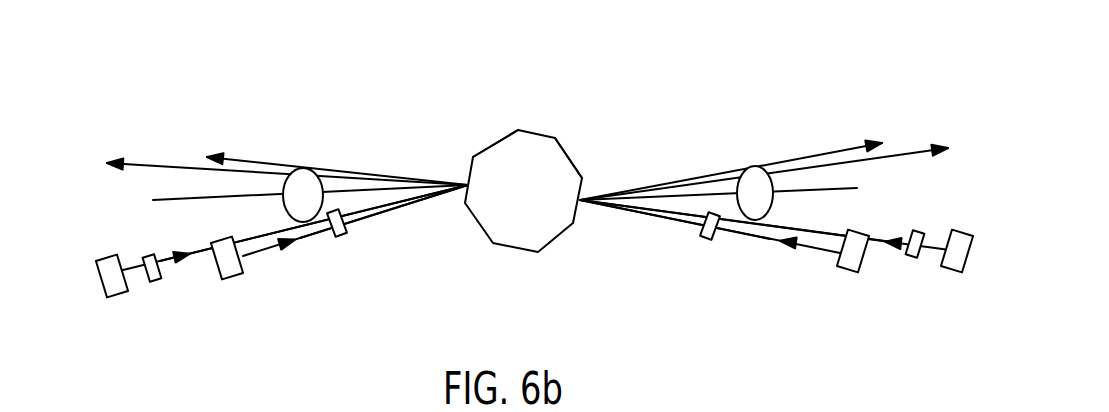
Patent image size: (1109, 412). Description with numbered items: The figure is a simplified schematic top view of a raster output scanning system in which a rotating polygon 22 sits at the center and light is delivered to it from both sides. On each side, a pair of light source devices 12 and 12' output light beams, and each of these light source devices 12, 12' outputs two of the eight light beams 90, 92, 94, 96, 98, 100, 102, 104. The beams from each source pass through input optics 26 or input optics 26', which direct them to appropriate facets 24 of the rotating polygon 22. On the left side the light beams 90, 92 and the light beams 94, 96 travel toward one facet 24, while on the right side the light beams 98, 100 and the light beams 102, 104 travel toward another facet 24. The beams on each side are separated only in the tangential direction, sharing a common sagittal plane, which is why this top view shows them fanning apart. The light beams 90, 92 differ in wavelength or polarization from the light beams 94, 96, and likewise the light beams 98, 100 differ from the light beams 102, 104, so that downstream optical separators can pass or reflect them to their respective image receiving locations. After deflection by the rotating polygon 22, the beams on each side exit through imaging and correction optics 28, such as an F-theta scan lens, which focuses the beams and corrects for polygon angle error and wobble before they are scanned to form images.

The light source device 12 is at (534, 296).
The light source device 12' is at (540, 288).
The rotating polygon 22 is at (537, 145).
The facet 24 is at (478, 143).
The input optics 26 is at (534, 281).
The input optics 26' is at (523, 244).
The imaging and correction optics 28 is at (303, 167).
The light beam 90 is at (258, 236).
The light beam 92 is at (258, 236).
The light beam 94 is at (270, 248).
The light beam 96 is at (270, 248).
The light beam 98 is at (877, 243).
The light beam 100 is at (877, 243).
The light beam 102 is at (772, 243).
The light beam 104 is at (772, 243).